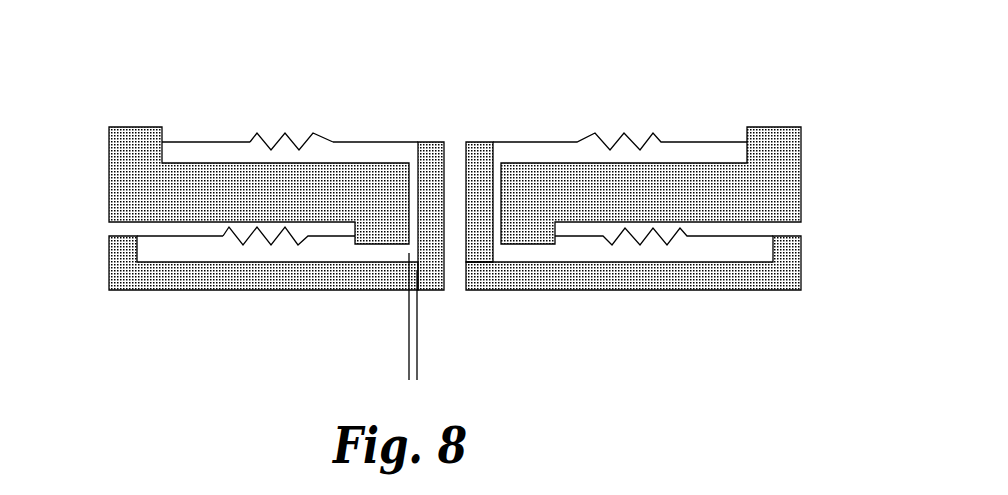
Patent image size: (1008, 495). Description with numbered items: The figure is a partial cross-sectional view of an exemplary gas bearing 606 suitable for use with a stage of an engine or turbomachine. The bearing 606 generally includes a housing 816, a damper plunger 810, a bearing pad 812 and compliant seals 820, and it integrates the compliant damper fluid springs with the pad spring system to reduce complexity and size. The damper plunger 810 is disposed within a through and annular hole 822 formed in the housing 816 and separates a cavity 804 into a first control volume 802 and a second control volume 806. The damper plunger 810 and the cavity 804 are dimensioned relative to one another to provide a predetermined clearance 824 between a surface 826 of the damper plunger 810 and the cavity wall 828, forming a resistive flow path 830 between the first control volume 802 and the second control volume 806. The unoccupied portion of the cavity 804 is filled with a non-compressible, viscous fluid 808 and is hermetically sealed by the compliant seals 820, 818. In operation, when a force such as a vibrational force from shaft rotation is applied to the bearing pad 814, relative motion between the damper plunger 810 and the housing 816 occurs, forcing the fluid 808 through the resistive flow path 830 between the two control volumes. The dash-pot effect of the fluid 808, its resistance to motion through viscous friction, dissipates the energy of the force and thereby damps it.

The bearing 606 is at (792, 98).
The first control volume 802 is at (350, 140).
The cavity 804 is at (546, 157).
The second control volume 806 is at (203, 257).
The fluid 808 is at (709, 255).
The damper plunger 810 is at (500, 148).
The bearing pad 812 is at (801, 260).
The bearing pad 814 is at (625, 308).
The housing 816 is at (801, 164).
The compliant seal 818 is at (142, 233).
The compliant seals 820 is at (258, 138).
The through and annular hole 822 is at (502, 209).
The clearance 824 is at (363, 352).
The surface of the damper plunger 826 is at (418, 150).
The cavity wall 828 is at (411, 220).
The resistive flow path 830 is at (527, 167).